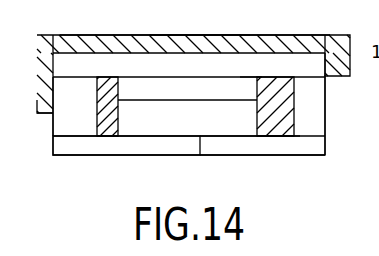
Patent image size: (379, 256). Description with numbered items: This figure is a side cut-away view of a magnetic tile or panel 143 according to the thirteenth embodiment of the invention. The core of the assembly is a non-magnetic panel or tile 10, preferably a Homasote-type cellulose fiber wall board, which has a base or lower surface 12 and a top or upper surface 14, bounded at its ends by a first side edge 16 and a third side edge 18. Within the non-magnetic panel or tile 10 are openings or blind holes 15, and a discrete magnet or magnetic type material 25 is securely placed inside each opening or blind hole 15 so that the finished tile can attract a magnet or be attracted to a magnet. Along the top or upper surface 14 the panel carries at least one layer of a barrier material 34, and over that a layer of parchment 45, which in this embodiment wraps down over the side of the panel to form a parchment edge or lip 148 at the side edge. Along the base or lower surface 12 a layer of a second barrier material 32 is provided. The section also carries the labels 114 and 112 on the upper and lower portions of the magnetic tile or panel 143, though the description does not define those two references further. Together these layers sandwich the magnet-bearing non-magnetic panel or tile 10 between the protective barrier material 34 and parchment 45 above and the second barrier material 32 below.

The barrier material 34 is at (165, 62).
The top surface 114 is at (200, 35).
The magnetic tile or panel 143 is at (228, 25).
The parchment layer 45 is at (316, 35).
The top or upper surface 14 is at (250, 74).
The non-magnetic panel or tile 10 is at (206, 114).
The base or lower surface 12 is at (248, 135).
The opening or hole or blind hole 15 is at (120, 93).
The discrete magnet or magnetic type material 25 is at (120, 118).
The third or side edge 18 is at (55, 92).
The parchment edge or lip 148 is at (44, 113).
The second barrier material 32 is at (165, 140).
The bottom surface 112 is at (243, 157).
The first or side edge 16 is at (327, 120).